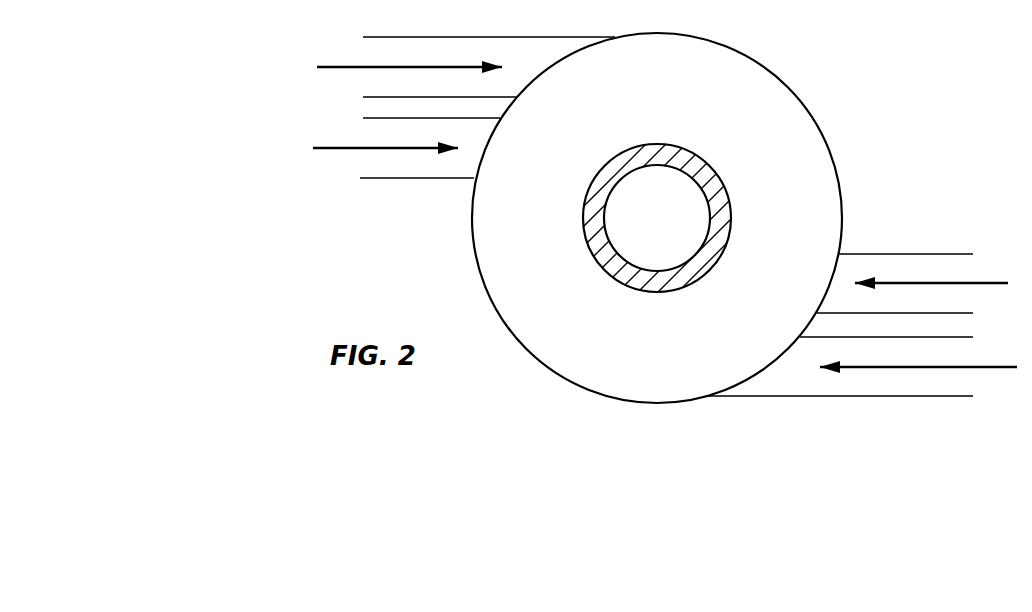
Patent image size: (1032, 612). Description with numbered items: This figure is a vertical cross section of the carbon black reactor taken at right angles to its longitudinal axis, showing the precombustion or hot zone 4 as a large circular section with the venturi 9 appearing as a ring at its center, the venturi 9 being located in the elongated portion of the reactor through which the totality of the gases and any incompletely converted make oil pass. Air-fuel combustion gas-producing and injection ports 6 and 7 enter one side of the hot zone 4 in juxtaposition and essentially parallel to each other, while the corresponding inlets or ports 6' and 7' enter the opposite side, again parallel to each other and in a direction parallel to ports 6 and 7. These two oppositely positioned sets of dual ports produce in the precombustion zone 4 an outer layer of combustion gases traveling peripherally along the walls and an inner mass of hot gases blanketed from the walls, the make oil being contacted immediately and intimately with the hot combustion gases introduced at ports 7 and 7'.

The precombustion zone 4 is at (665, 104).
The venturi 9 is at (716, 192).
The air-fuel combustion gas-producing and injection port 6 is at (417, 67).
The air-fuel combustion gas-producing and injection port 7 is at (393, 148).
The corresponding inlet or port 7' is at (922, 283).
The corresponding inlet or port 6' is at (909, 367).